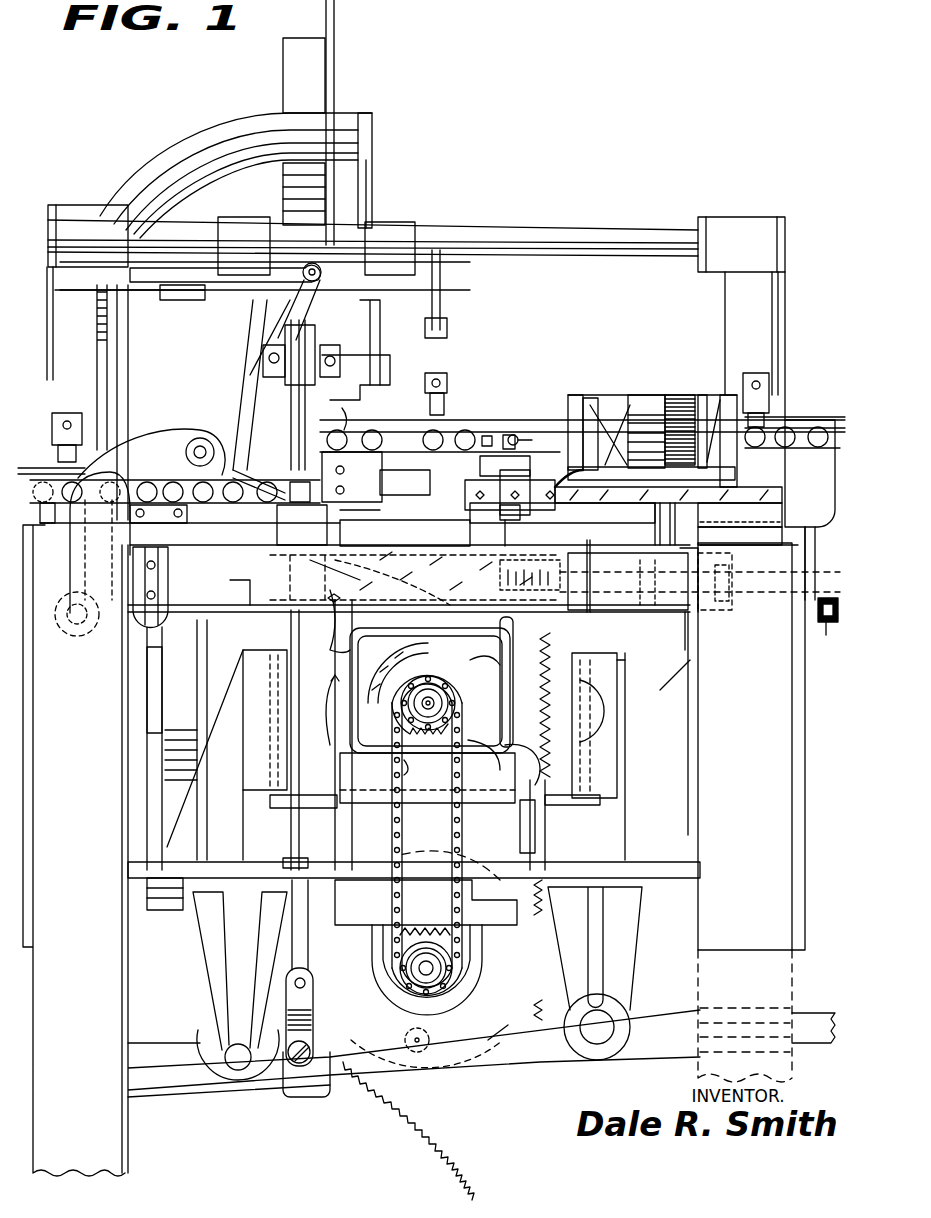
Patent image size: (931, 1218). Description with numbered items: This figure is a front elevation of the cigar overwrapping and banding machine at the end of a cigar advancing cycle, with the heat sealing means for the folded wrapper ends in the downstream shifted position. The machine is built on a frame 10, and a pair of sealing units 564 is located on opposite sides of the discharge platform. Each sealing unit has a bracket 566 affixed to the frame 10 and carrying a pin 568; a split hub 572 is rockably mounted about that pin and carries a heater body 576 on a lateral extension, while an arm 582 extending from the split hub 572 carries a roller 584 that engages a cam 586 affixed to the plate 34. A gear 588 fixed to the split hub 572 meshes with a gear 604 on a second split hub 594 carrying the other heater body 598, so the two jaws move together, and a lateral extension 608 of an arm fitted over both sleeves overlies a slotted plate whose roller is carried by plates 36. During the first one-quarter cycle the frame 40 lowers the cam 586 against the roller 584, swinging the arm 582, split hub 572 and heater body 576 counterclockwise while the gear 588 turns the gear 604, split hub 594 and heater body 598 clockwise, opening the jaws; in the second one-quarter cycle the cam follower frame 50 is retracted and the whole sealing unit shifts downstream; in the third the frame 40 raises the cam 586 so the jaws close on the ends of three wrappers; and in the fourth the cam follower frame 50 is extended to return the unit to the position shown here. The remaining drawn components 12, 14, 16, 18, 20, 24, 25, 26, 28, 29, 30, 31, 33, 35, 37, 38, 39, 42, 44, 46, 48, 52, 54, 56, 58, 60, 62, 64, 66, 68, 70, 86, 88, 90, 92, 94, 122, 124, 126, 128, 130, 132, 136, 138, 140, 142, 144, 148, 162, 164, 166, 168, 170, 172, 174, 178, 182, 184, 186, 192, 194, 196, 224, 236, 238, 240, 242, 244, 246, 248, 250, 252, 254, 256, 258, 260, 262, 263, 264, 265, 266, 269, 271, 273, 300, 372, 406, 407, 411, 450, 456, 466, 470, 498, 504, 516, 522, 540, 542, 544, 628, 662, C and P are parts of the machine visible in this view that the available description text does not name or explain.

The frame 10 is at (88, 1143).
The bed 12 is at (409, 578).
The carriage 14 is at (440, 520).
The base plate 16 is at (432, 508).
The side frame 18 is at (55, 525).
The cam 20 is at (155, 492).
The roller rail 24 is at (780, 470).
The block 25 is at (283, 525).
The roller bracket 26 is at (170, 531).
The bracket 28 is at (140, 567).
The rail 29 is at (28, 462).
The column 30 is at (219, 728).
The switch 31 is at (65, 413).
The rollers 33 is at (440, 442).
The plate 34 is at (645, 679).
The rail 35 is at (812, 420).
The plates 36 is at (685, 650).
The rail 37 is at (582, 418).
The bracket 38 is at (657, 632).
The stop bolt 39 is at (447, 400).
The frame 40 is at (577, 628).
The slide block 42 is at (243, 652).
The bar 44 is at (528, 836).
The guide 46 is at (258, 700).
The cross bar 48 is at (685, 873).
The cam follower frame 50 is at (520, 642).
The gear 52 is at (475, 630).
The sprocket 54 is at (400, 640).
The arm 56 is at (318, 580).
The bar 58 is at (517, 682).
The spring 60 is at (505, 760).
The housing 62 is at (700, 590).
The bracket 64 is at (722, 610).
The switch 66 is at (828, 608).
The plate 68 is at (505, 565).
The lever 70 is at (479, 672).
The plate 86 is at (560, 752).
The gear 88 is at (365, 1072).
The sprocket 90 is at (410, 960).
The rack 92 is at (510, 943).
The rack 94 is at (535, 910).
The bracket 122 is at (625, 936).
The pulley 124 is at (600, 1025).
The lever 126 is at (497, 1033).
The gear 128 is at (442, 1068).
The housing 130 is at (475, 980).
The bar 132 is at (185, 1092).
The bolt 136 is at (312, 1050).
The link 138 is at (312, 1002).
The pin 140 is at (307, 985).
The rod 142 is at (296, 826).
The plate 144 is at (270, 835).
The platform 148 is at (285, 565).
The arm 162 is at (335, 565).
The rail 164 is at (536, 235).
The block 166 is at (392, 243).
The lever 168 is at (312, 268).
The strut 170 is at (250, 357).
The foot 172 is at (278, 450).
The bar 174 is at (180, 295).
The column 178 is at (130, 357).
The bar 182 is at (162, 1050).
The pulley 184 is at (238, 1040).
The bracket 186 is at (225, 950).
The rod 192 is at (305, 380).
The post 194 is at (356, 344).
The block 196 is at (312, 338).
The bracket 224 is at (395, 372).
The housing 236 is at (424, 703).
The housing base 238 is at (395, 790).
The arm 240 is at (360, 610).
The arm 242 is at (330, 785).
The chain 244 is at (487, 786).
The chain 246 is at (428, 800).
The bolt 248 is at (332, 598).
The panel 250 is at (660, 796).
The bracket 252 is at (235, 588).
The plate 254 is at (270, 798).
The guide 256 is at (490, 858).
The panel 258 is at (190, 834).
The lever 260 is at (262, 306).
The hanger 262 is at (395, 318).
The shaft 263 is at (430, 705).
The arm 264 is at (196, 129).
The cam 265 is at (401, 667).
The block 266 is at (369, 106).
The pawl 269 is at (418, 745).
The housing 271 is at (390, 900).
The gear 273 is at (430, 935).
The post 300 is at (346, 19).
The block 372 is at (292, 48).
The roller 406 is at (206, 425).
The roller 407 is at (200, 446).
The roller 411 is at (335, 440).
The rod 450 is at (150, 672).
The block 456 is at (172, 690).
The spring 466 is at (152, 758).
The block 470 is at (165, 905).
The plate 498 is at (376, 527).
The block 504 is at (356, 466).
The bolt 516 is at (488, 438).
The bolt 522 is at (505, 538).
The bolt 540 is at (524, 440).
The block 542 is at (505, 456).
The bolt 544 is at (510, 435).
The sealing unit 564 is at (635, 344).
The bracket 566 is at (612, 410).
The pin 568 is at (575, 503).
The split hub 572 is at (668, 494).
The heater body 576 is at (514, 496).
The arm 582 is at (585, 467).
The roller 584 is at (660, 568).
The cam 586 is at (651, 477).
The gear 588 is at (737, 379).
The split hub 594 is at (645, 395).
The heater body 598 is at (575, 395).
The gear 604 is at (677, 395).
The lateral extension 608 is at (722, 510).
The curtain 628 is at (812, 1012).
The block 662 is at (809, 510).
The cam C is at (100, 531).
The pin P is at (545, 433).